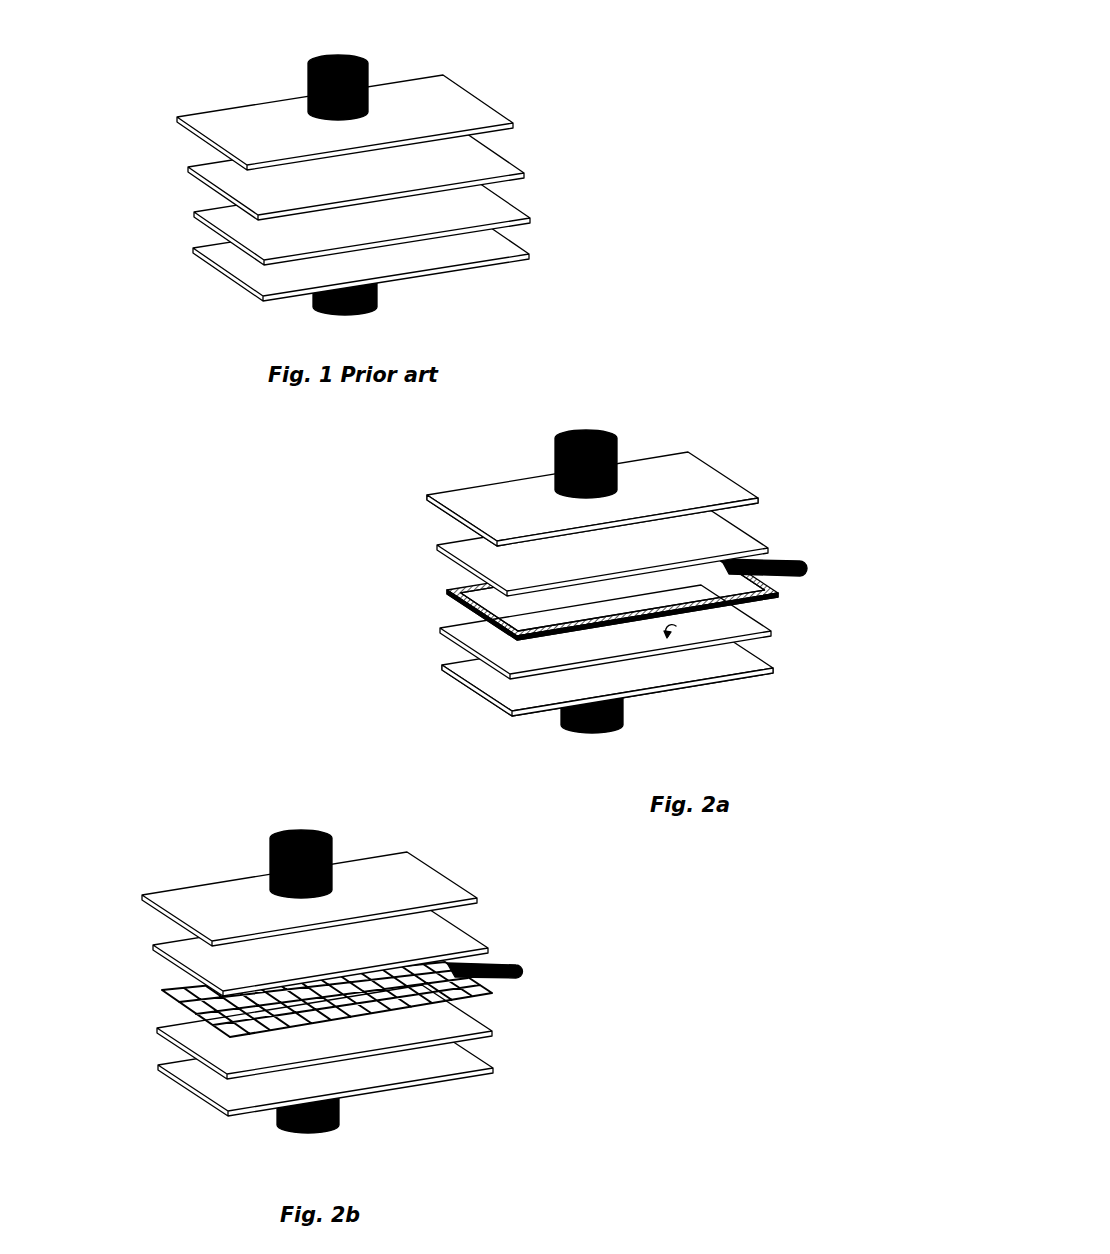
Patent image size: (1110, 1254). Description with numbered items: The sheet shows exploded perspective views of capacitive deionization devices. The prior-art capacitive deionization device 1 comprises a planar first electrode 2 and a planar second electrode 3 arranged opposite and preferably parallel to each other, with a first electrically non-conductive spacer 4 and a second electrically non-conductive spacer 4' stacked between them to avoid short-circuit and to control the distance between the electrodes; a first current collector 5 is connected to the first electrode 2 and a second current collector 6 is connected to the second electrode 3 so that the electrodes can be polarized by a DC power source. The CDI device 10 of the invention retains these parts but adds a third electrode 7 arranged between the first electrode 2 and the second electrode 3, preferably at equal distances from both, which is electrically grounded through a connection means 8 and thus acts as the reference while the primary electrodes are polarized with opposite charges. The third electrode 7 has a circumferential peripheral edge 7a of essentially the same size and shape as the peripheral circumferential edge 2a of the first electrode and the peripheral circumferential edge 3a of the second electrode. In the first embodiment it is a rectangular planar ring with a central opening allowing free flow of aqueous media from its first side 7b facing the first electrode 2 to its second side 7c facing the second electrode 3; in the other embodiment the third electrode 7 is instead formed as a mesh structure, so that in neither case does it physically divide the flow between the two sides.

In FIG. 1, the capacitive deionization device 1 is at (130, 66).
In FIG. 1, the first electrode 2 is at (458, 101).
In FIG. 2A, the first electrode 2 is at (706, 480).
In FIG. 2B, the first electrode 2 is at (421, 880).
In FIG. 2A, the peripheral circumferential edge of the first electrode 2a is at (453, 522).
In FIG. 1, the second electrode 3 is at (508, 244).
In FIG. 2A, the second electrode 3 is at (752, 659).
In FIG. 2B, the second electrode 3 is at (468, 1059).
In FIG. 2A, the peripheral circumferential edge of the second electrode 3a is at (718, 678).
In FIG. 1, the first electrically non-conductive spacer 4 is at (375, 163).
In FIG. 2A, the first electrically non-conductive spacer 4 is at (623, 540).
In FIG. 2B, the first electrically non-conductive spacer 4 is at (340, 940).
In FIG. 1, the second electrically non-conductive spacer 4' is at (383, 210).
In FIG. 2A, the second electrically non-conductive spacer 4' is at (581, 635).
In FIG. 2B, the second electrically non-conductive spacer 4' is at (300, 1036).
In FIG. 1, the first current collector 5 is at (306, 88).
In FIG. 2A, the first current collector 5 is at (554, 463).
In FIG. 2B, the first current collector 5 is at (269, 863).
In FIG. 1, the second current collector 6 is at (376, 291).
In FIG. 2A, the second current collector 6 is at (626, 705).
In FIG. 2B, the second current collector 6 is at (342, 1105).
In FIG. 2A, the third electrode 7 is at (446, 592).
In FIG. 2B, the third electrode 7 is at (162, 990).
In FIG. 2A, the circumferential peripheral edge of the third electrode 7a is at (470, 606).
In FIG. 2A, the first side of the third electrode 7b is at (664, 606).
In FIG. 2A, the second side of the third electrode 7c is at (687, 632).
In FIG. 2A, the connection means 8 is at (804, 568).
In FIG. 2B, the connection means 8 is at (520, 970).
In FIG. 2A, the CDI device 10 is at (704, 408).
In FIG. 2B, the CDI device 10 is at (180, 826).